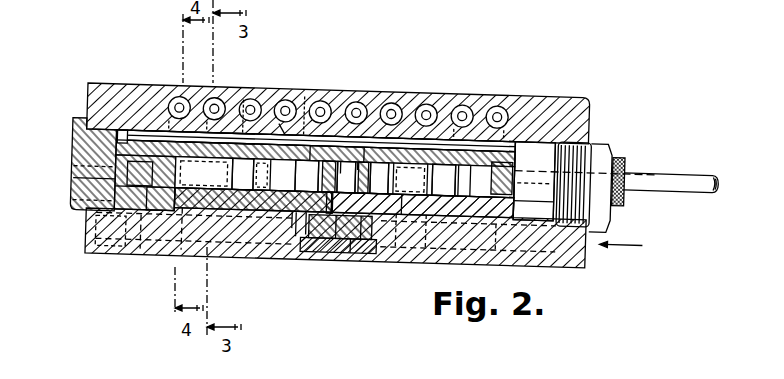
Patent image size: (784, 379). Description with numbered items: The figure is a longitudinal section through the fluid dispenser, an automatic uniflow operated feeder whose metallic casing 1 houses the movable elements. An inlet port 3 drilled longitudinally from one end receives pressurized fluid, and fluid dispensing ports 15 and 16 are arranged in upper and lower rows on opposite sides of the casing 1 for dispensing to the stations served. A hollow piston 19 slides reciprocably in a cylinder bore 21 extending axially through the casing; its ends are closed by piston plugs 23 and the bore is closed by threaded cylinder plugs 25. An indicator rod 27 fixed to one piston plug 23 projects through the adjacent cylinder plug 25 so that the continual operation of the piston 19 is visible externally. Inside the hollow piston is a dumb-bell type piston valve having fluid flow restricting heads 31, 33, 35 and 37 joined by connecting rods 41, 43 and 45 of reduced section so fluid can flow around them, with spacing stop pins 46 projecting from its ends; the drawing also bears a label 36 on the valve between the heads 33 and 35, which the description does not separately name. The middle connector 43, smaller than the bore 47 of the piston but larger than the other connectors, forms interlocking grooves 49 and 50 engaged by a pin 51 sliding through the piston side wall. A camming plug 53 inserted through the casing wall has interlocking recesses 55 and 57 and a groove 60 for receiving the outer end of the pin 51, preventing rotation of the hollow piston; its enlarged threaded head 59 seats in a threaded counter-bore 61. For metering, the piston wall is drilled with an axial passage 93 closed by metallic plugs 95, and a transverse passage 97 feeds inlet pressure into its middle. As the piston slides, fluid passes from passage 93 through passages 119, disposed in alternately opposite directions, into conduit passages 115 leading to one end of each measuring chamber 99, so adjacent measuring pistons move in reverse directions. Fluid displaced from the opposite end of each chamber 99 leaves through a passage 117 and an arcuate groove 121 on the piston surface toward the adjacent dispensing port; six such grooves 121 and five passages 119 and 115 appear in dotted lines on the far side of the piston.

The casing 1 is at (104, 83).
The inlet port 3 is at (503, 248).
The fluid dispensing ports 15 is at (86, 232).
The fluid dispensing ports 16 is at (135, 247).
The hollow piston 19 is at (414, 192).
The cylinder bore 21 is at (533, 142).
The piston plugs 23 is at (112, 168).
The cylinder plugs 25 is at (80, 137).
The indicator rod 27 is at (656, 181).
The fluid flow restricting head 31 is at (243, 174).
The fluid flow restricting head 33 is at (307, 176).
The fluid flow restricting head 35 is at (379, 178).
The piston 36 is at (341, 187).
The fluid flow restricting head 37 is at (443, 180).
The connecting rod 41 is at (295, 222).
The middle connector 43 is at (358, 162).
The connecting rod 45 is at (408, 215).
The spacing stop pins 46 is at (208, 180).
The bore 47 is at (220, 205).
The interlocking groove 49 is at (342, 165).
The interlocking groove 50 is at (366, 150).
The pin 51 is at (310, 230).
The camming plug 53 is at (357, 253).
The interlocking recess 55 is at (300, 238).
The interlocking recess 57 is at (363, 252).
The enlarged head 59 is at (322, 250).
The groove 60 is at (345, 250).
The counter-bore 61 is at (367, 252).
The passage 93 is at (276, 97).
The metallic plugs 95 is at (506, 130).
The transverse passage 97 is at (313, 150).
The measuring chambers 99 is at (440, 102).
The conduit passage 115 is at (459, 128).
The passage 117 is at (508, 128).
The passages 119 is at (307, 84).
The arcuate groove 121 is at (74, 205).